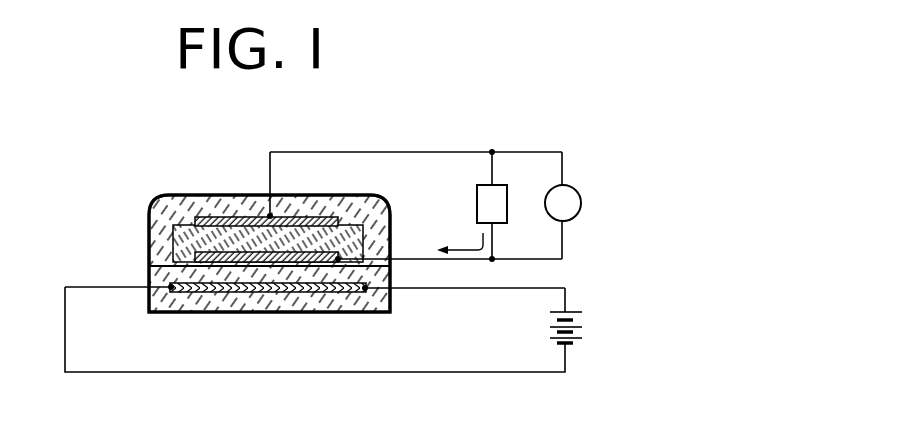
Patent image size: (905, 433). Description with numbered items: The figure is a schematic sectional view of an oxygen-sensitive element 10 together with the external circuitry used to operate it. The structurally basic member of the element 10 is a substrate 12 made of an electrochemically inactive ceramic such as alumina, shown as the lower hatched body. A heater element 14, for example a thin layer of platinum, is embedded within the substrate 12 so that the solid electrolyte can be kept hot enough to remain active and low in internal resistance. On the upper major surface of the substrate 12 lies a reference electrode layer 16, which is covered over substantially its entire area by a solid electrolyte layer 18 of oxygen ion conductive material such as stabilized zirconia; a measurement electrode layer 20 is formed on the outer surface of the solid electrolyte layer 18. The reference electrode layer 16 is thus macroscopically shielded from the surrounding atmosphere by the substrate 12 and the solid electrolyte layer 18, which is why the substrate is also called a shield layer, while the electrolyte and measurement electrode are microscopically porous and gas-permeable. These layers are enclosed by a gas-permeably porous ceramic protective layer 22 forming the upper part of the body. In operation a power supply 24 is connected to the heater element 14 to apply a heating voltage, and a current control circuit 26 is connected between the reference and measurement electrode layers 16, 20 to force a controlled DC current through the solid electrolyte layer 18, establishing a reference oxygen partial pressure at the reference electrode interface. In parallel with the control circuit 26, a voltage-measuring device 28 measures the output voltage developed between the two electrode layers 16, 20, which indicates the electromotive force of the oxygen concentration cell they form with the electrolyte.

The oxygen-sensitive element 10 is at (248, 176).
The substrate 12 is at (160, 273).
The heater element 14 is at (222, 292).
The reference electrode layer 16 is at (196, 258).
The solid electrolyte layer 18 is at (179, 230).
The measurement electrode layer 20 is at (223, 216).
The protective layer 22 is at (350, 207).
The power supply 24 is at (552, 320).
The current control circuit 26 is at (477, 198).
The voltage-measuring device 28 is at (578, 190).